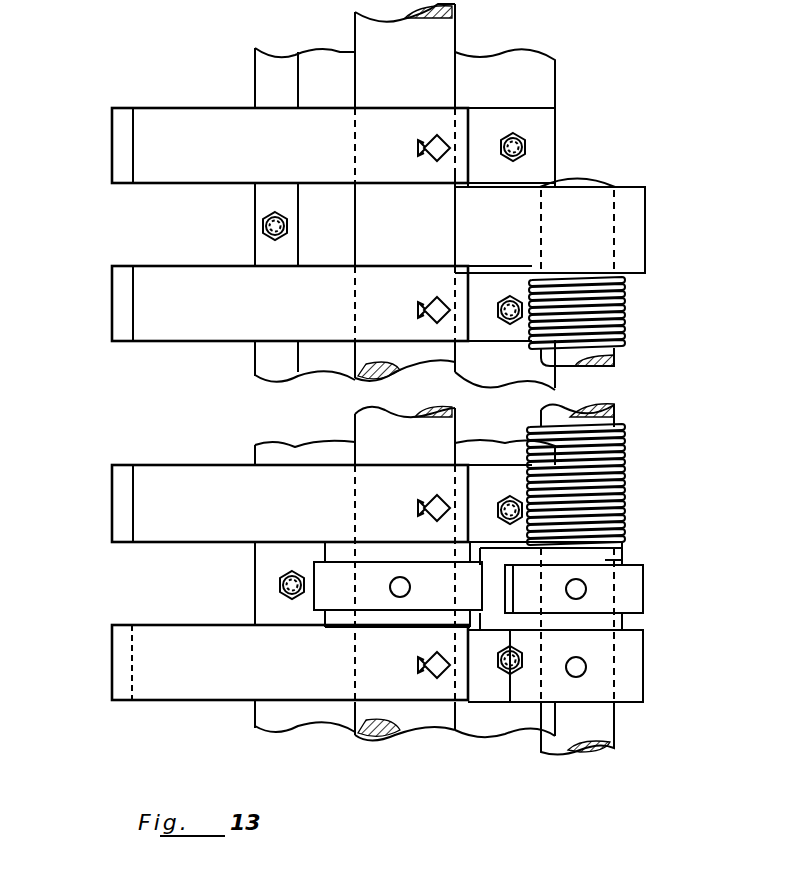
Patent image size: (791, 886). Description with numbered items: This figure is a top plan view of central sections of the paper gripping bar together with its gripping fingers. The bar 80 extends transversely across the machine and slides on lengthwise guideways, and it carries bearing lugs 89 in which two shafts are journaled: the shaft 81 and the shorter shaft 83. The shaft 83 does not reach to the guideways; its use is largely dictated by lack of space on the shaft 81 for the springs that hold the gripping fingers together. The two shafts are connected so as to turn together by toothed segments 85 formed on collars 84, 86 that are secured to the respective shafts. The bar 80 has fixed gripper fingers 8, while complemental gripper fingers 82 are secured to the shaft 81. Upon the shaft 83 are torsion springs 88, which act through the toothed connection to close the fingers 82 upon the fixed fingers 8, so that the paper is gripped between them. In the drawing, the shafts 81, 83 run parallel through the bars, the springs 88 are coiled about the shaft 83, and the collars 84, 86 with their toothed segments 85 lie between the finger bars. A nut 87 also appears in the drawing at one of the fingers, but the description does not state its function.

The fixed gripper fingers 8 is at (116, 655).
The bar 80 is at (235, 440).
The shaft 81 is at (368, 430).
The complemental gripper fingers 82 is at (216, 626).
The shaft 83 is at (598, 722).
The collar 84 is at (630, 586).
The toothed segments 85 is at (508, 562).
The collar 86 is at (348, 565).
The wing nut 87 is at (422, 500).
The torsion springs 88 is at (638, 467).
The bearing lugs 89 is at (550, 221).